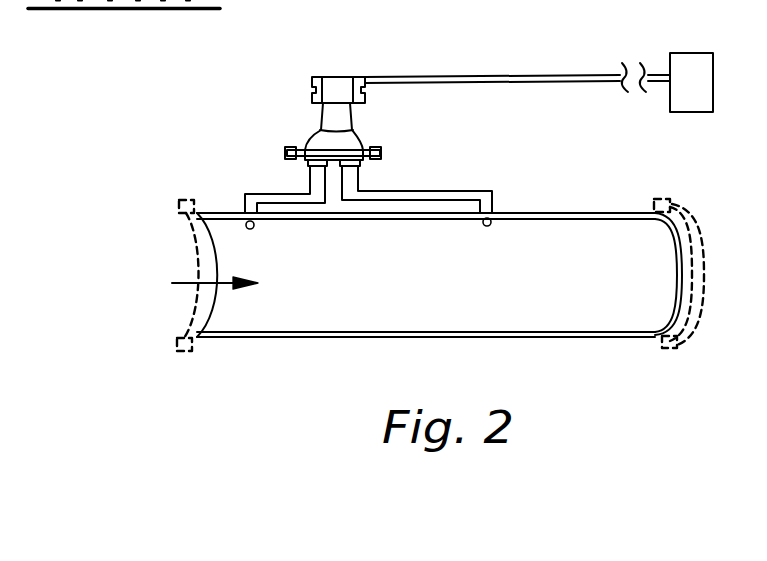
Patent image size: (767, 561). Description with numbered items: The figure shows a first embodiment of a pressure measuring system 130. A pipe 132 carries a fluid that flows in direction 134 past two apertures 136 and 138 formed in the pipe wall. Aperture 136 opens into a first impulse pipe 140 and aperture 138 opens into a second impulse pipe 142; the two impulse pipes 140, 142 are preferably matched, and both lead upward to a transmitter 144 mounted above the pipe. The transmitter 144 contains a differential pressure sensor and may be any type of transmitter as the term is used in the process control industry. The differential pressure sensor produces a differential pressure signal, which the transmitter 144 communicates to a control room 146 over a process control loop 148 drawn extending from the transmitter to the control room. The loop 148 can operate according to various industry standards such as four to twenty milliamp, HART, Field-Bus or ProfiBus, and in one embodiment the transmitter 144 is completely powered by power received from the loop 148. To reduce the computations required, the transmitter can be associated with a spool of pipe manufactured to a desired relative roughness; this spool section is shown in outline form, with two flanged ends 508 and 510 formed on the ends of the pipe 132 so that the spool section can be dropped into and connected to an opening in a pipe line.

The pressure measuring system 130 is at (320, 103).
The pipe 132 is at (307, 338).
The direction of fluid flow 134 is at (185, 284).
The aperture 136 is at (254, 227).
The aperture 138 is at (491, 223).
The impulse pipe 140 is at (258, 194).
The impulse pipe 142 is at (460, 191).
The transmitter 144 is at (335, 62).
The control room 146 is at (688, 53).
The process control loop 148 is at (477, 75).
The flanged end 508 is at (176, 203).
The flanged end 510 is at (683, 328).